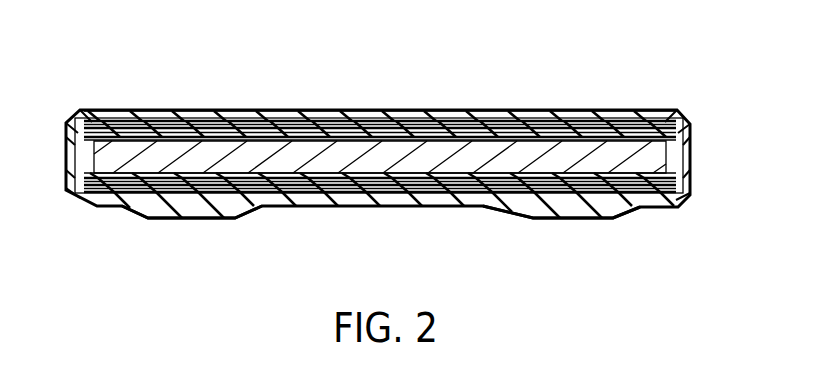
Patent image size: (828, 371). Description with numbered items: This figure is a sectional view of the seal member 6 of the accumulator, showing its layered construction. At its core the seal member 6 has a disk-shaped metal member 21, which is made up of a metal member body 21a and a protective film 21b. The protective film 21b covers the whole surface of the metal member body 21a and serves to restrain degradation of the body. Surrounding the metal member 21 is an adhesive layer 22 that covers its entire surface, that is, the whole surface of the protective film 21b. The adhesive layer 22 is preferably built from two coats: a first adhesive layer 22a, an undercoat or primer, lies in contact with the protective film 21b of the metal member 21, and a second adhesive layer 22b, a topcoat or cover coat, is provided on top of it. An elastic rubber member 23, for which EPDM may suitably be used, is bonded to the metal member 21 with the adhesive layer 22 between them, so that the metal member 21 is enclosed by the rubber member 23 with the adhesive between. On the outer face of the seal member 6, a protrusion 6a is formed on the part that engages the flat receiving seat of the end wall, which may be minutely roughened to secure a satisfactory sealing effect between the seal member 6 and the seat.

The seal member 6 is at (587, 110).
The protrusion 6a is at (183, 208).
The metal member 21 is at (380, 221).
The metal member body 21a is at (370, 165).
The protective film 21b is at (437, 176).
The adhesive layer 22 is at (380, 79).
The first adhesive layer 22a is at (342, 113).
The second adhesive layer 22b is at (323, 60).
The elastic rubber member 23 is at (507, 113).